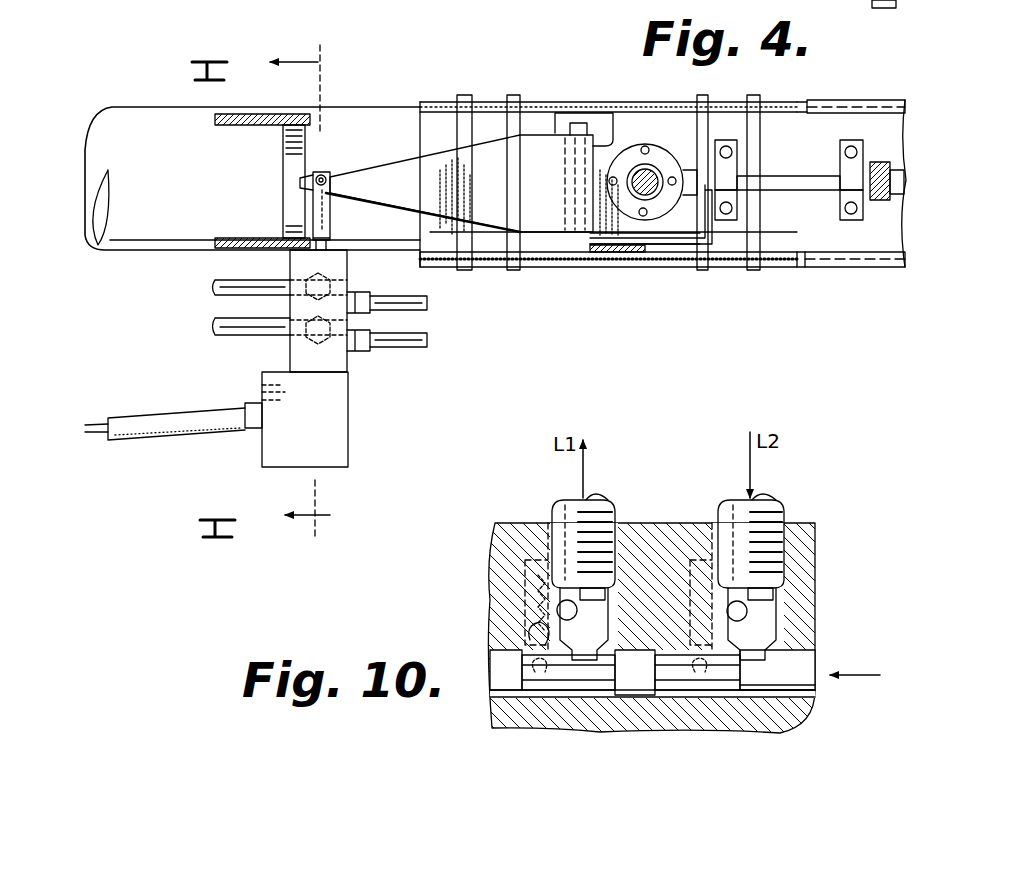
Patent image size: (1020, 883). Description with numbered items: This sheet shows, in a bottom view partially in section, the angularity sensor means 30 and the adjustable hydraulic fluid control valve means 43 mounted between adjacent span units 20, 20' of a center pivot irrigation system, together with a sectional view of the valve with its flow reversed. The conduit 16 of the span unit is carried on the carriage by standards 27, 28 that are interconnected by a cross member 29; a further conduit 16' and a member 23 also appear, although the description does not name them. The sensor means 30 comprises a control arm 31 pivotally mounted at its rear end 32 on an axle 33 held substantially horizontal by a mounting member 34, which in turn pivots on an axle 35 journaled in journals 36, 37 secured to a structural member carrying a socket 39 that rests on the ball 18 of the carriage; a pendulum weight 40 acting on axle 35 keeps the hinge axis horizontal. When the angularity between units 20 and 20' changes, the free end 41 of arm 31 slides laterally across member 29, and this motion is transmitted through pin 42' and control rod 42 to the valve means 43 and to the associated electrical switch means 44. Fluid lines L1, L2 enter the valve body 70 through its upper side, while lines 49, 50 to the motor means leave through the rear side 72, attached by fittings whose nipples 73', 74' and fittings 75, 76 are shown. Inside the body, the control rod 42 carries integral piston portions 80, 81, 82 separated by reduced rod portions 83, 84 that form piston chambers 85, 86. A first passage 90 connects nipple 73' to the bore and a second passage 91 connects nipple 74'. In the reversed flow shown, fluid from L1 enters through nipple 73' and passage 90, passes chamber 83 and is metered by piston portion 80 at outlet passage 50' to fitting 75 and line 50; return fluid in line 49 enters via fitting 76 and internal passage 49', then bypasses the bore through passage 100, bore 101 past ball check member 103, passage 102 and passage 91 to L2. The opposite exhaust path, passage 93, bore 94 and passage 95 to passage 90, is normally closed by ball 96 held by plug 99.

In FIG. 4, the conduit 16 is at (419, 171).
In FIG. 4, the housing wall 16' is at (851, 153).
In FIG. 4, the ball 18 is at (650, 188).
In FIG. 4, the span unit 20 is at (64, 290).
In FIG. 4, the span unit 20' is at (794, 320).
In FIG. 4, the lower plate 23 is at (638, 268).
In FIG. 4, the standard 27 is at (218, 124).
In FIG. 4, the standard 28 is at (235, 235).
In FIG. 4, the cross member 29 is at (285, 157).
In FIG. 4, the angularity sensor means 30 is at (535, 238).
In FIG. 4, the control arm 31 is at (474, 185).
In FIG. 4, the rear end 32 is at (613, 113).
In FIG. 4, the axle 33 is at (580, 122).
In FIG. 4, the mounting member 34 is at (605, 252).
In FIG. 4, the axle 35 is at (776, 192).
In FIG. 4, the journal 36 is at (735, 170).
In FIG. 4, the journal 37 is at (842, 170).
In FIG. 4, the socket 39 is at (650, 150).
In FIG. 4, the pendulum weight 40 is at (878, 268).
In FIG. 4, the free end 41 is at (322, 172).
In FIG. 4, the control rod 42 is at (331, 203).
In FIG. 4, the pin 42' is at (350, 153).
In FIG. 4, the adjustable hydraulic fluid control valve means 43 is at (280, 348).
In FIG. 4, the electrical switch means 44 is at (255, 452).
In FIG. 4, the fluid line 49 is at (421, 359).
In FIG. 10, the internal passage 49' is at (739, 758).
In FIG. 4, the fluid line 50 is at (430, 313).
In FIG. 10, the passage 50' is at (464, 732).
In FIG. 4, the valve means body 70 is at (310, 355).
In FIG. 4, the side 72 is at (340, 270).
In FIG. 10, the nipple 73' is at (536, 530).
In FIG. 10, the nipple 74' is at (789, 523).
In FIG. 4, the fitting 75 is at (362, 290).
In FIG. 4, the fitting 76 is at (355, 352).
In FIG. 10, the piston portion 80 is at (500, 665).
In FIG. 10, the piston portion 81 is at (630, 680).
In FIG. 10, the piston portion 82 is at (800, 683).
In FIG. 10, the rod portion 83 is at (555, 675).
In FIG. 10, the rod portion 84 is at (672, 680).
In FIG. 10, the piston chamber 85 is at (567, 697).
In FIG. 10, the piston chamber 86 is at (663, 697).
In FIG. 10, the first passage 90 is at (603, 588).
In FIG. 10, the second passage 91 is at (778, 598).
In FIG. 10, the passage 93 is at (525, 648).
In FIG. 10, the bore 94 is at (520, 570).
In FIG. 10, the passage 95 is at (580, 604).
In FIG. 10, the ball 96 is at (515, 608).
In FIG. 10, the plug 99 is at (515, 535).
In FIG. 10, the passage 100 is at (651, 628).
In FIG. 10, the bore 101 is at (680, 560).
In FIG. 10, the passage 102 is at (748, 613).
In FIG. 10, the ball check member 103 is at (777, 670).
In FIG. 4, the fluid line L1 is at (228, 278).
In FIG. 4, the fluid line L2 is at (228, 335).